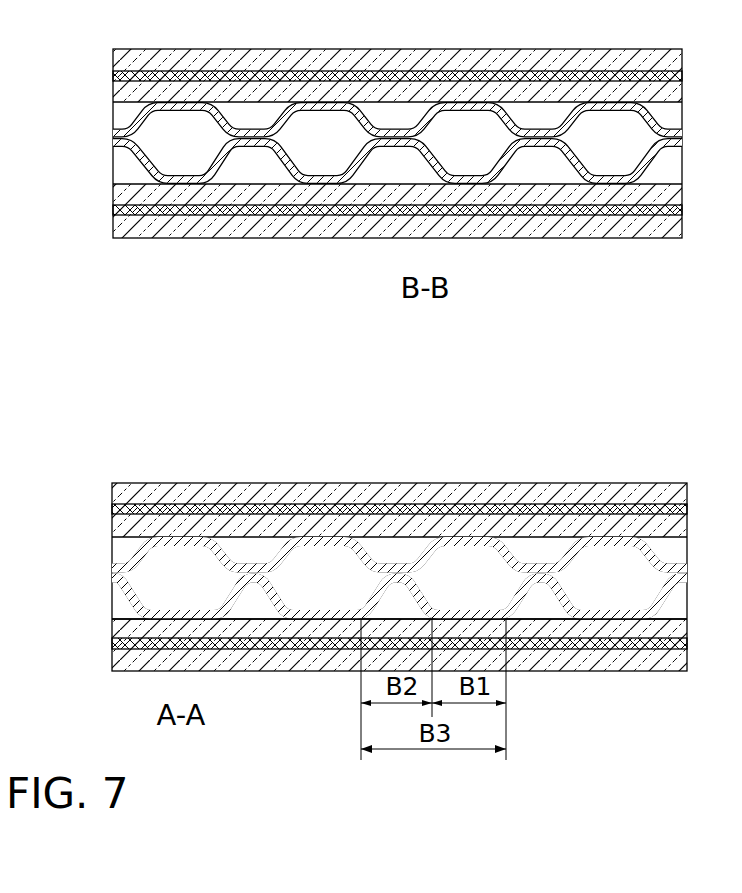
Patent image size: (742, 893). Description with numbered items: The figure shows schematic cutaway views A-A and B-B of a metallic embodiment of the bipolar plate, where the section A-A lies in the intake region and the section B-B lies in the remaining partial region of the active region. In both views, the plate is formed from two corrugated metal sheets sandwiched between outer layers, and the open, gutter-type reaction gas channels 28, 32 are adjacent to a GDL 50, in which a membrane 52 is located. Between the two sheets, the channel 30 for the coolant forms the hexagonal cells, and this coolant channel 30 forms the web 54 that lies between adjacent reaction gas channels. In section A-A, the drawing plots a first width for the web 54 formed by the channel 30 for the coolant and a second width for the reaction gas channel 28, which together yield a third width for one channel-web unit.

The reaction gas channel 28 is at (427, 97).
The channel for the coolant 30 is at (462, 137).
The reaction gas channel 32 is at (395, 118).
The GDL 50 is at (675, 61).
The membrane 52 is at (122, 75).
The web 54 is at (325, 183).